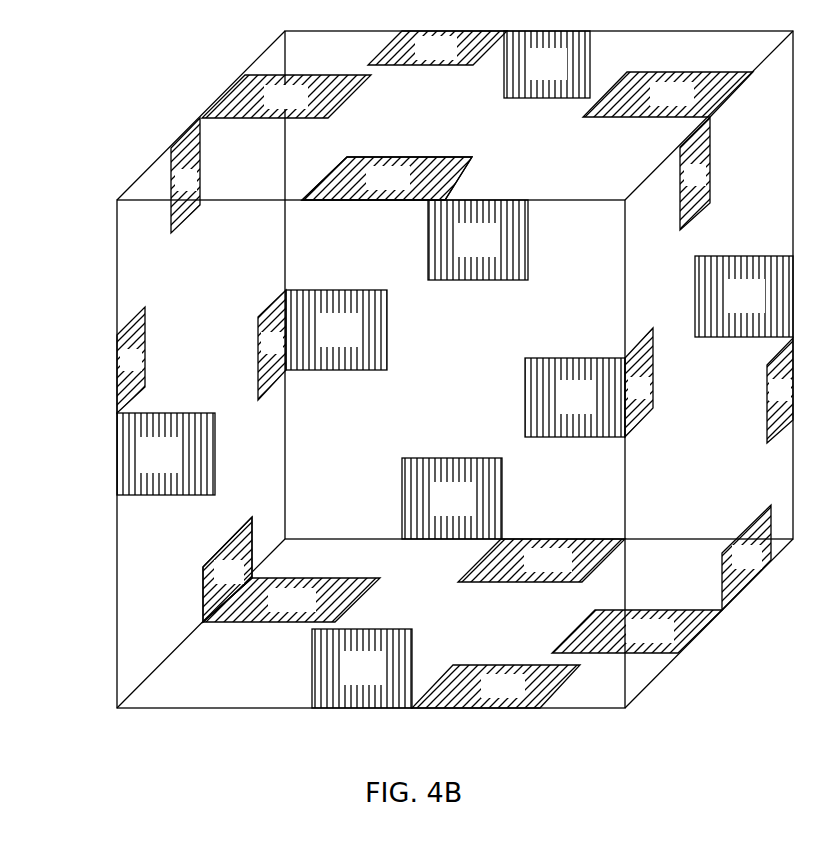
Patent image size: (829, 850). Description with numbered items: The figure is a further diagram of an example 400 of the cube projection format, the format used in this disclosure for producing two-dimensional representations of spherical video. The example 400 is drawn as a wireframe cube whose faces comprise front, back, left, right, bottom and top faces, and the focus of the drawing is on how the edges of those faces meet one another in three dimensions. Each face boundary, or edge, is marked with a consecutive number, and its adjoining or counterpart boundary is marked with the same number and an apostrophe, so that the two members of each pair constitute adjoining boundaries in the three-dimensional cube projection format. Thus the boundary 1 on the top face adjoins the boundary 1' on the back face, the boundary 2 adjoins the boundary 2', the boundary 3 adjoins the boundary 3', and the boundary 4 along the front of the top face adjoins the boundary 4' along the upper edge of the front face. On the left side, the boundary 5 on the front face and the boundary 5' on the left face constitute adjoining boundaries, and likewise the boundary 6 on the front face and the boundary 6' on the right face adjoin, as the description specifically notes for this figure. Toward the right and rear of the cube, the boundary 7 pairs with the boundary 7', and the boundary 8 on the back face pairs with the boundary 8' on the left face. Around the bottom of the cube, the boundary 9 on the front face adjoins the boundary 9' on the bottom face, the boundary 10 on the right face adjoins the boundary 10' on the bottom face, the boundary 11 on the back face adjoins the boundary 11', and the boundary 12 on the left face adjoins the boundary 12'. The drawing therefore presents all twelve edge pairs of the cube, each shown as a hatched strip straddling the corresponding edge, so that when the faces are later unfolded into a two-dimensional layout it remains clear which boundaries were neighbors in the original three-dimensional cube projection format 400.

The cube projection format example 400 is at (96, 750).
The face boundary 1 is at (437, 48).
The counterpart face boundary 1' is at (547, 64).
The face boundary 2 is at (286, 96).
The counterpart face boundary 2' is at (185, 175).
The face boundary 3 is at (668, 94).
The counterpart face boundary 3' is at (695, 173).
The face boundary 4 is at (387, 178).
The counterpart face boundary 4' is at (478, 240).
The face boundary 5 is at (166, 454).
The counterpart face boundary 5' is at (131, 360).
The face boundary 6 is at (575, 397).
The counterpart face boundary 6' is at (639, 382).
The face boundary 7 is at (780, 390).
The counterpart face boundary 7' is at (744, 296).
The face boundary 8 is at (336, 330).
The counterpart face boundary 8' is at (272, 345).
The face boundary 9 is at (362, 668).
The counterpart face boundary 9' is at (496, 686).
The face boundary 10 is at (746, 557).
The counterpart face boundary 10' is at (637, 631).
The face boundary 11 is at (452, 498).
The counterpart face boundary 11' is at (541, 560).
The face boundary 12 is at (227, 569).
The counterpart face boundary 12' is at (291, 600).